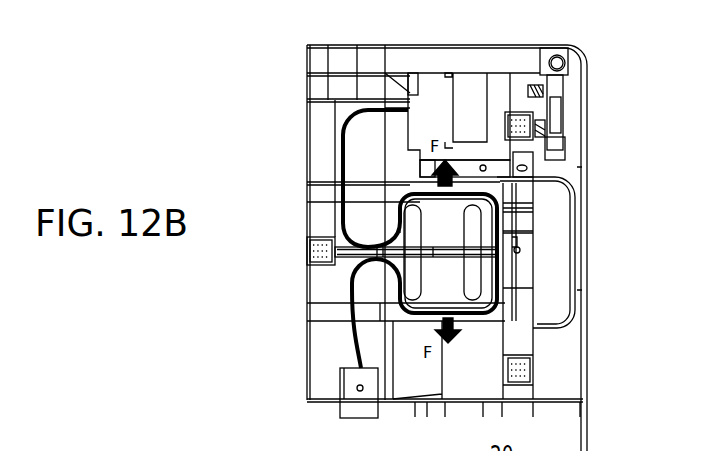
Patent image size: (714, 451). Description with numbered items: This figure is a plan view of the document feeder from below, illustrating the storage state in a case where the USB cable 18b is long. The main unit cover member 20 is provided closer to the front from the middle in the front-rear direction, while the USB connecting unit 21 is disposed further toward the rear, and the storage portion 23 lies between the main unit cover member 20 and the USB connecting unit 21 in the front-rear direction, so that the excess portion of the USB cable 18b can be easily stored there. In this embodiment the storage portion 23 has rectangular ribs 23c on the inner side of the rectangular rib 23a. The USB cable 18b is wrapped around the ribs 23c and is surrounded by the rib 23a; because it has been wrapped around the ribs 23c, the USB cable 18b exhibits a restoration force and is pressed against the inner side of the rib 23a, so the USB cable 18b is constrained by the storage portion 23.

The main unit cover member 20 is at (510, 86).
The USB cable 18b is at (345, 193).
The storage portion 23 is at (485, 314).
The rectangular rib 23a is at (418, 314).
The rectangular ribs 23c is at (423, 224).
The USB connecting unit 21 is at (340, 370).